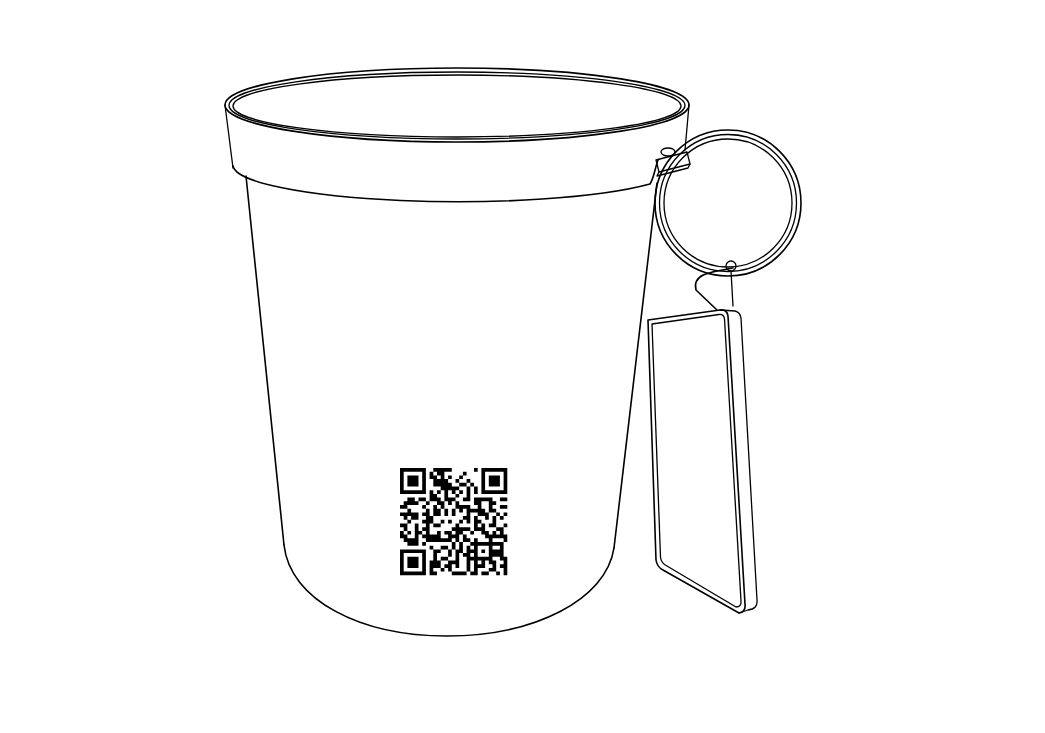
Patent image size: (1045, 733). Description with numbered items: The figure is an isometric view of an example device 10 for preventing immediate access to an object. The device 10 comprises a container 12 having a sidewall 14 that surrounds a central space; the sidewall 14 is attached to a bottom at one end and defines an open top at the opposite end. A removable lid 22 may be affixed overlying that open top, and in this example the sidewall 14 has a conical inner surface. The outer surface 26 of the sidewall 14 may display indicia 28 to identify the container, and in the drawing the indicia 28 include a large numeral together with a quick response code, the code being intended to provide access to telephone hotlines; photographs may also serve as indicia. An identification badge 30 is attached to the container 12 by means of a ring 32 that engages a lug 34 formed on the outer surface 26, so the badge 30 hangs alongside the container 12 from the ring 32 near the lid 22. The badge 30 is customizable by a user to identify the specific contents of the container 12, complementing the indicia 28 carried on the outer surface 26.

The device 10 is at (103, 42).
The container 12 is at (292, 258).
The sidewall 14 is at (316, 465).
The removable lid 22 is at (597, 156).
The outer surface 26 is at (314, 408).
The indicia 28 is at (433, 311).
The identification badge 30 is at (707, 574).
The ring 32 is at (800, 193).
The lug 34 is at (664, 148).